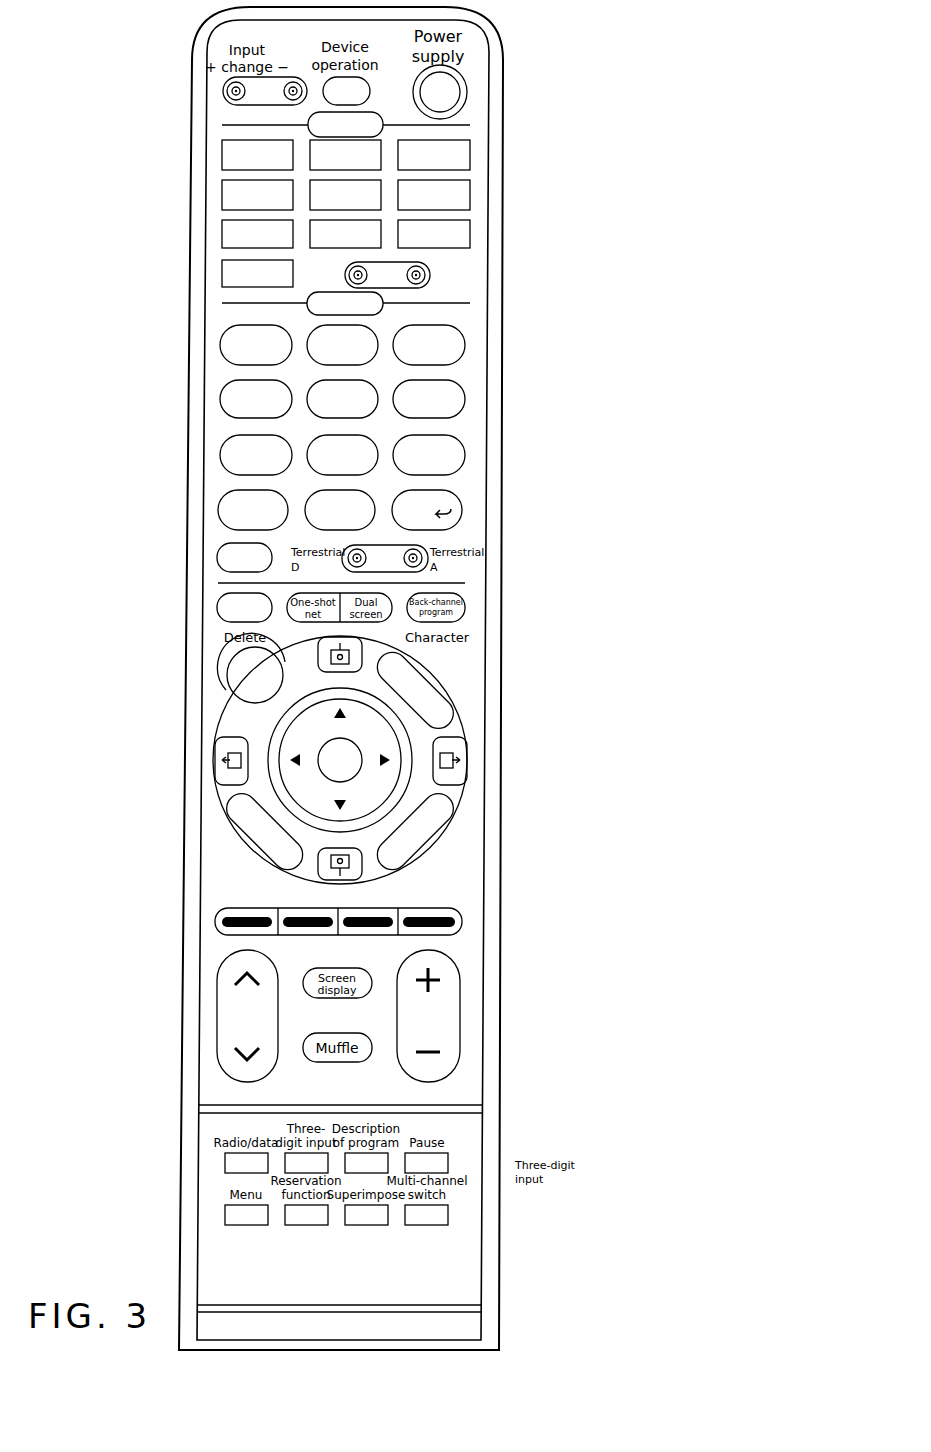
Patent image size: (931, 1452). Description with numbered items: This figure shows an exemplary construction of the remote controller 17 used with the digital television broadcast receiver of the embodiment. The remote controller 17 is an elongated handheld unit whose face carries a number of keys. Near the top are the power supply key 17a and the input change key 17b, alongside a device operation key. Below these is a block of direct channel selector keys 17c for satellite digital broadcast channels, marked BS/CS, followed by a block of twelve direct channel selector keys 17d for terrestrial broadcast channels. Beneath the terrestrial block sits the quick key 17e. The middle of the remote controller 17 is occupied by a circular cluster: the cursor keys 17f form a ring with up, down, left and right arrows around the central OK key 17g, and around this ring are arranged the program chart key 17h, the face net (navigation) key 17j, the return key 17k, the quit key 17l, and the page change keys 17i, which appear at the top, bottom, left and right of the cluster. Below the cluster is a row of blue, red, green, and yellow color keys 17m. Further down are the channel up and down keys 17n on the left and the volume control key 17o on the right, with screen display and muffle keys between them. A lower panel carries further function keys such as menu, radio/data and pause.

The remote controller 17 is at (504, 564).
The power supply key 17a is at (452, 93).
The input change key 17b is at (232, 92).
The direct channel selector keys for satellite digital broadcast channels 17c is at (478, 203).
The direct channel selector keys for terrestrial broadcast channels 17d is at (470, 412).
The quick key 17e is at (222, 560).
The cursor keys 17f is at (382, 780).
The OK key 17g is at (362, 744).
The program chart key 17h is at (432, 712).
The page change keys 17i is at (358, 652).
The face net (navigation) key 17j is at (235, 677).
The return key 17k is at (240, 818).
The quit key 17l is at (440, 810).
The color keys 17m is at (465, 920).
The channel up and down keys 17n is at (225, 1005).
The volume control key 17o is at (462, 1013).